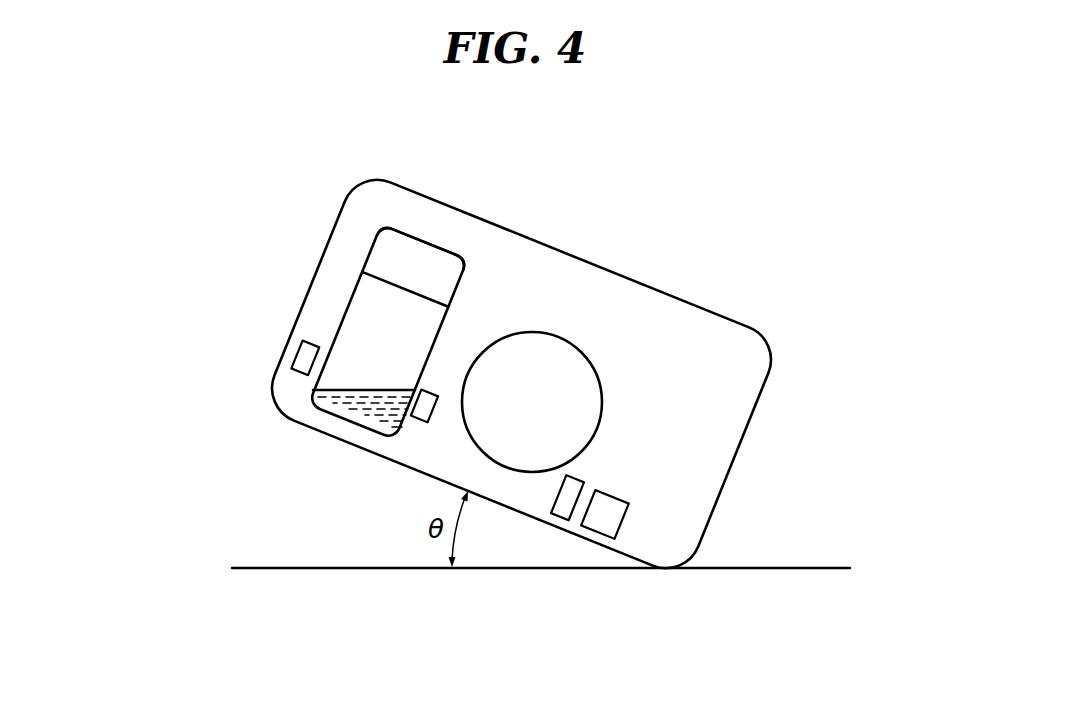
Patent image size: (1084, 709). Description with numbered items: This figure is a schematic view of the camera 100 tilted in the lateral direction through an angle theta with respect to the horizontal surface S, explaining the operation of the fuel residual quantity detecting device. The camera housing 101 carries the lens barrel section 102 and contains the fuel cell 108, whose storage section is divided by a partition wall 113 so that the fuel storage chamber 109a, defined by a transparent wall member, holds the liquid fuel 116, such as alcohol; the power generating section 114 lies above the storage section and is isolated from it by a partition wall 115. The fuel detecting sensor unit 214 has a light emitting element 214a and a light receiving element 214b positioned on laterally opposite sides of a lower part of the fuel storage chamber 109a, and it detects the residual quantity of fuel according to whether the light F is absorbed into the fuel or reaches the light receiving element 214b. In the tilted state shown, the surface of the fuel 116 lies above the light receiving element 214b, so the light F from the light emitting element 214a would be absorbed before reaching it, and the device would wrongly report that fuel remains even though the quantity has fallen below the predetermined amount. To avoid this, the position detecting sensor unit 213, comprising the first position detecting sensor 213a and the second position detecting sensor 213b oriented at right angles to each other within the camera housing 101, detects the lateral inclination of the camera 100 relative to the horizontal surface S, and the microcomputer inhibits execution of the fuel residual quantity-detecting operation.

The camera 100 is at (510, 395).
The camera housing 101 is at (647, 304).
The lens barrel section 102 is at (547, 334).
The fuel cell 108 is at (415, 230).
The fuel storage chamber 109a is at (375, 313).
The partition wall 113 is at (377, 347).
The power generating section 114 is at (385, 257).
The partition wall 115 is at (425, 292).
The fuel 116 is at (360, 405).
The light F is at (392, 390).
The position detecting sensor unit 213 is at (600, 569).
The first position detecting sensor 213a is at (630, 556).
The second position detecting sensor 213b is at (563, 512).
The fuel detecting sensor unit 214 is at (342, 501).
The light emitting element 214a is at (303, 362).
The light receiving element 214b is at (423, 400).
The horizontal surface S is at (813, 567).